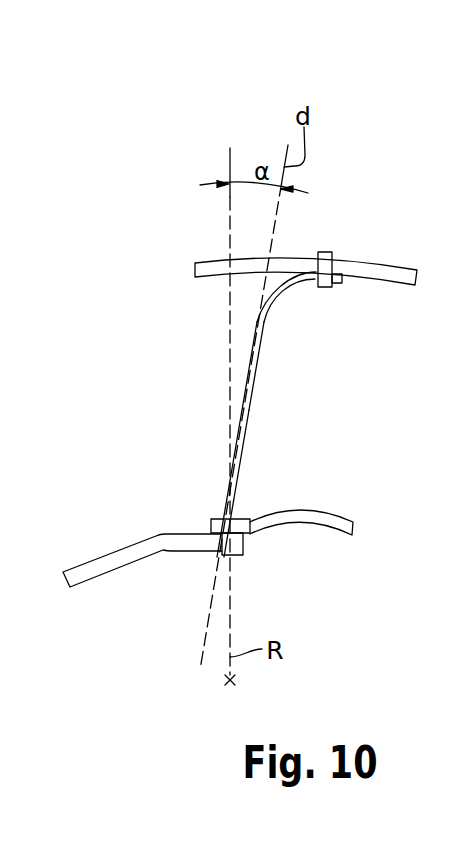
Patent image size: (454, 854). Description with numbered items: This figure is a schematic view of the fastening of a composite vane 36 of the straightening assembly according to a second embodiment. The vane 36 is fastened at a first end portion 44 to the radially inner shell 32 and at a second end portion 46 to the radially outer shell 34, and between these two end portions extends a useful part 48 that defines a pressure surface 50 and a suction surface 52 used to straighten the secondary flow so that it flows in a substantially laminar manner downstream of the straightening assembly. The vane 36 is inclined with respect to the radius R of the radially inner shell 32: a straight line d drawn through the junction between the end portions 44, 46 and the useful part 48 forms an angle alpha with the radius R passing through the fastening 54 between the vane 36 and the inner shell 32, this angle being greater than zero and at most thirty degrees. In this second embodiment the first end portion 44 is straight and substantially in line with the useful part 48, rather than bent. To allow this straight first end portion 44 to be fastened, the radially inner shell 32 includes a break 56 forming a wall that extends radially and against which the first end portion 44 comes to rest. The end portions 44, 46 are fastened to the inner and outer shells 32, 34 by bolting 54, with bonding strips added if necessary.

The radially inner shell 32 is at (342, 521).
The radially outer shell 34 is at (393, 268).
The vane 36 is at (238, 414).
The first end portion 44 is at (227, 512).
The second end portion 46 is at (285, 288).
The useful part 48 is at (249, 422).
The pressure surface 50 is at (253, 395).
The suction surface 52 is at (246, 370).
The fastening 54 is at (327, 252).
The break 56 is at (193, 560).